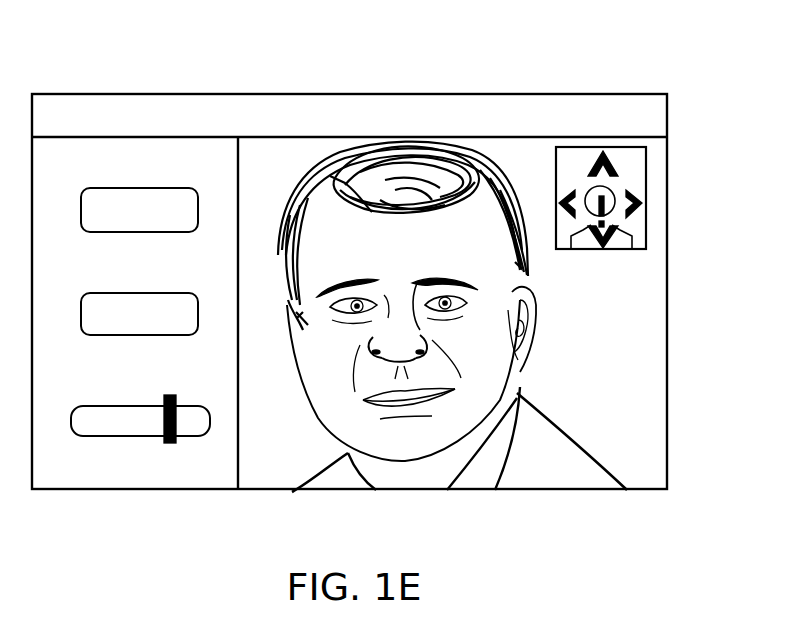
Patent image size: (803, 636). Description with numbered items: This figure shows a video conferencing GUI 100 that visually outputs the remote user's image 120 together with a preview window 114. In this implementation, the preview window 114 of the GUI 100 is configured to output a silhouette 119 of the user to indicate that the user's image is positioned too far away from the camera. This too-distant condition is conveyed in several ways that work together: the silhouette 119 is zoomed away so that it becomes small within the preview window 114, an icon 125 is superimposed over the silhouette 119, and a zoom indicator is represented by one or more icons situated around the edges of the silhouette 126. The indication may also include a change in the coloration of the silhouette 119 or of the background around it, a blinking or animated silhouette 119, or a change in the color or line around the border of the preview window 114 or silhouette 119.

The video conferencing GUI 100 is at (182, 82).
The preview window 114 is at (648, 207).
The silhouette 119 is at (611, 183).
The remote user's image 120 is at (538, 323).
The icon 125 is at (610, 213).
The icons situated around the edges of the silhouette 126 is at (615, 160).